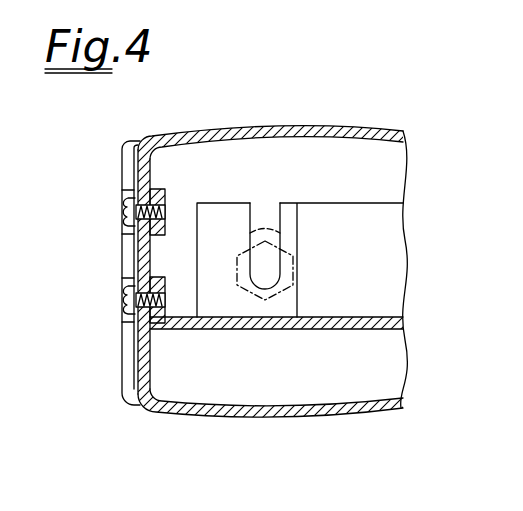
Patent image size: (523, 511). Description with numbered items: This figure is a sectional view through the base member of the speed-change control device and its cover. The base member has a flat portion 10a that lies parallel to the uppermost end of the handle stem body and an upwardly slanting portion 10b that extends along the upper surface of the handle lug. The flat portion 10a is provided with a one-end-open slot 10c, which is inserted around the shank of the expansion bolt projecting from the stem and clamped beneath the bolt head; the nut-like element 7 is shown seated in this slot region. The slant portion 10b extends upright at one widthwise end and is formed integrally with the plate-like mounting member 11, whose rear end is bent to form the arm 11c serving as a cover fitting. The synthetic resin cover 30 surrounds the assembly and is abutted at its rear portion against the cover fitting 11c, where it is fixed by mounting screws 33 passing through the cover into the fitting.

The nut 7 is at (255, 297).
The flat portion 10a is at (215, 218).
The upwardly slanting portion 10b is at (343, 222).
The one-end-open slot 10c is at (273, 222).
The mounting member 11 is at (337, 330).
The arm (cover fitting) 11c is at (136, 259).
The cover 30 is at (125, 364).
The mounting screw 33 is at (127, 315).